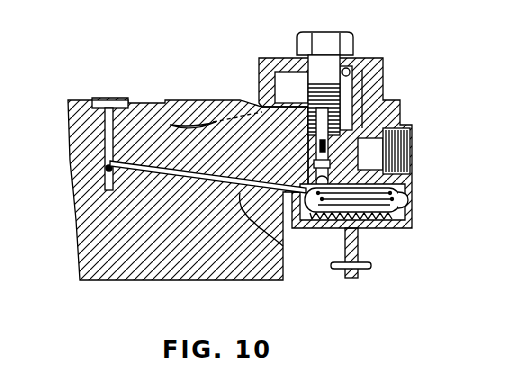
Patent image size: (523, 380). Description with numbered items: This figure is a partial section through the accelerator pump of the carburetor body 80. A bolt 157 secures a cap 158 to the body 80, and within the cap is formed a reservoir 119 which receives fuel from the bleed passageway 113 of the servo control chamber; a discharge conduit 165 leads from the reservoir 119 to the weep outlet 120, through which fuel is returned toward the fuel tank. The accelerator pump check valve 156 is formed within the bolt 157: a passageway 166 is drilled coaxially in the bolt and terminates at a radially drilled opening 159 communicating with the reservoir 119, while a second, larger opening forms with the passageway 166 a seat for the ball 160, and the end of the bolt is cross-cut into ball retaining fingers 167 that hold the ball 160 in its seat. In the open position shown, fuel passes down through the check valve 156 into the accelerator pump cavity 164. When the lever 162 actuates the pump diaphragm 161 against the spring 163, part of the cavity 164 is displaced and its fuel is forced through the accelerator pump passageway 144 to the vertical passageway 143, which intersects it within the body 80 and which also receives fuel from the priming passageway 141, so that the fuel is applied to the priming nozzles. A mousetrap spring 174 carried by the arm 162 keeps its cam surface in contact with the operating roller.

The body 80 is at (100, 256).
The bleed passageway 113 is at (172, 123).
The reservoir 119 is at (300, 93).
The outlet 120 is at (400, 168).
The priming passageway 141 is at (108, 190).
The vertical passageway 143 is at (105, 170).
The accelerator pump passageway 144 is at (286, 236).
The check valve 156 is at (412, 126).
The bolt 157 is at (316, 118).
The cap 158 is at (260, 84).
The radially drilled opening 159 is at (318, 147).
The ball 160 is at (350, 200).
The pump diaphragm 161 is at (412, 230).
The lever 162 is at (352, 280).
The spring 163 is at (400, 215).
The accelerator pump cavity 164 is at (405, 197).
The discharge conduit 165 is at (349, 74).
The passageway 166 is at (315, 165).
The ball retaining fingers 167 is at (317, 182).
The mousetrap spring 174 is at (372, 266).